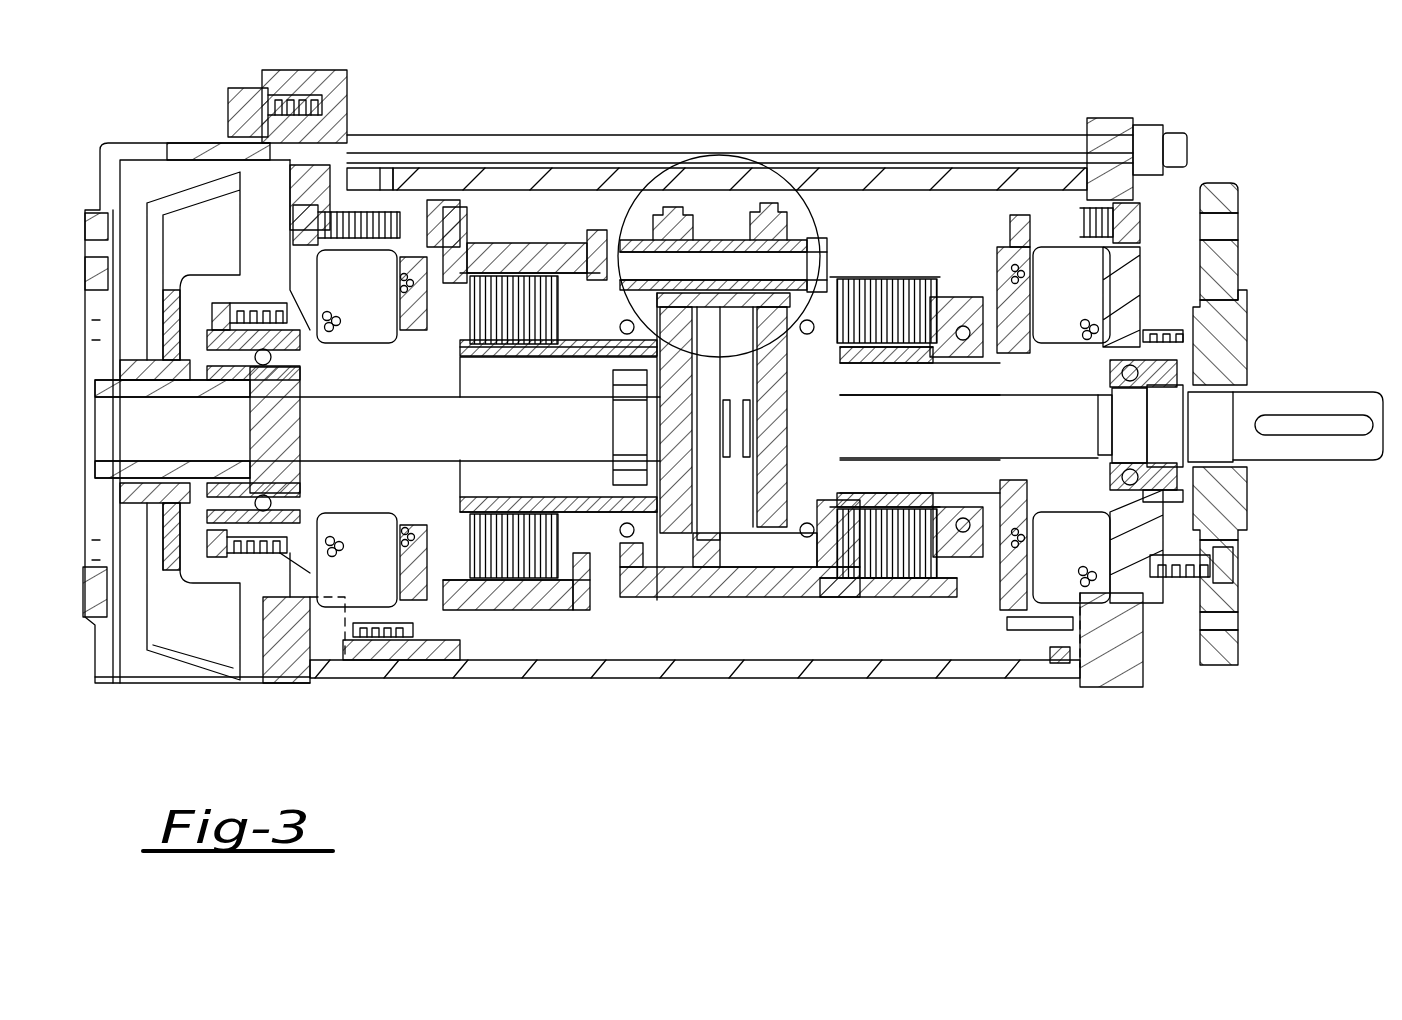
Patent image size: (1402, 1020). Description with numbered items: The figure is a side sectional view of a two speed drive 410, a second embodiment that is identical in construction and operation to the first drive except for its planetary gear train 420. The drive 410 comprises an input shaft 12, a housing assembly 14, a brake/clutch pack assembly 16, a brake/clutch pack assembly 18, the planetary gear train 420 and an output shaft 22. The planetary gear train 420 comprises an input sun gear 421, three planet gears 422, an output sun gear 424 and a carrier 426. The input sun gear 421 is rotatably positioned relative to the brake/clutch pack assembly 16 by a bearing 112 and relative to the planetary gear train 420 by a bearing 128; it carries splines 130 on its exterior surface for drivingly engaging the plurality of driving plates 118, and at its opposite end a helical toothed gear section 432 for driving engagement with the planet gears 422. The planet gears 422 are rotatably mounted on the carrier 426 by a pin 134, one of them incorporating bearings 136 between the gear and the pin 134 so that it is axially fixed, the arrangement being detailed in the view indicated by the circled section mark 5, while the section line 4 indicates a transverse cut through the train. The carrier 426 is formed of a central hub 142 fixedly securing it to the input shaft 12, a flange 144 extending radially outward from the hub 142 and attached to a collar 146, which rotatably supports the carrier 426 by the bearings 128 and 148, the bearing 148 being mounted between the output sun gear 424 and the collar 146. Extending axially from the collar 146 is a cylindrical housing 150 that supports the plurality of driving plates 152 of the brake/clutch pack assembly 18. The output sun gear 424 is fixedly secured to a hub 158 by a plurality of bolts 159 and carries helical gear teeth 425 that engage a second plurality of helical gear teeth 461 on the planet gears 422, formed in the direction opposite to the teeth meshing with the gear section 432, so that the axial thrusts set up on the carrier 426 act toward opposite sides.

The two speed drive 410 is at (848, 60).
The housing assembly 14 is at (465, 135).
The brake/clutch pack assembly 16 is at (500, 652).
The input shaft 12 is at (165, 438).
The driving plates 118 is at (450, 527).
The pin 134 is at (615, 250).
The splines 130 is at (476, 357).
The bearing 128 is at (583, 393).
The central hub 142 is at (613, 470).
The bearing 112 is at (580, 608).
The planet gears 422 is at (765, 162).
The bearings 136 is at (655, 162).
The helical gear teeth 461 is at (792, 163).
The detail view 5 is at (825, 246).
The section line 4- 4 is at (747, 86).
The planetary gear train 420 is at (730, 660).
The bolts 159 is at (853, 460).
The input sun gear 421 is at (653, 525).
The helical toothed gear section 432 is at (717, 614).
The helical gear teeth 425 is at (712, 548).
The output sun gear 424 is at (835, 365).
The bearing 148 is at (910, 478).
The hub 158 is at (913, 500).
The carrier 426 is at (822, 600).
The flange 144 is at (760, 600).
The collar 146 is at (805, 600).
The cylindrical housing 150 is at (918, 600).
The driving plates 152 is at (980, 560).
The brake/clutch pack assembly 18 is at (958, 262).
The output shaft 22 is at (1030, 440).